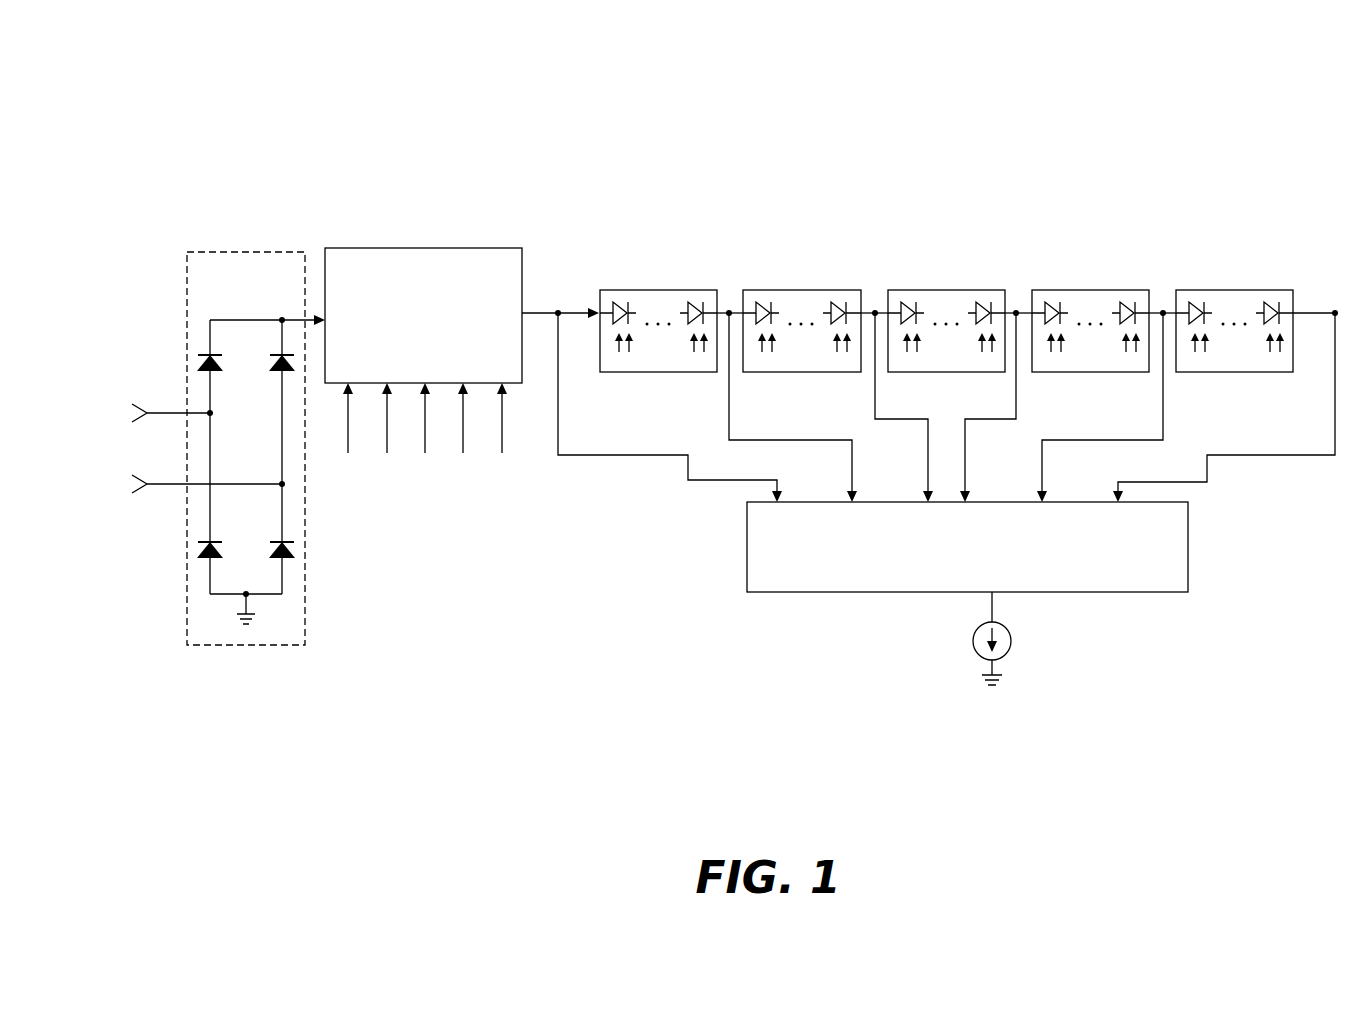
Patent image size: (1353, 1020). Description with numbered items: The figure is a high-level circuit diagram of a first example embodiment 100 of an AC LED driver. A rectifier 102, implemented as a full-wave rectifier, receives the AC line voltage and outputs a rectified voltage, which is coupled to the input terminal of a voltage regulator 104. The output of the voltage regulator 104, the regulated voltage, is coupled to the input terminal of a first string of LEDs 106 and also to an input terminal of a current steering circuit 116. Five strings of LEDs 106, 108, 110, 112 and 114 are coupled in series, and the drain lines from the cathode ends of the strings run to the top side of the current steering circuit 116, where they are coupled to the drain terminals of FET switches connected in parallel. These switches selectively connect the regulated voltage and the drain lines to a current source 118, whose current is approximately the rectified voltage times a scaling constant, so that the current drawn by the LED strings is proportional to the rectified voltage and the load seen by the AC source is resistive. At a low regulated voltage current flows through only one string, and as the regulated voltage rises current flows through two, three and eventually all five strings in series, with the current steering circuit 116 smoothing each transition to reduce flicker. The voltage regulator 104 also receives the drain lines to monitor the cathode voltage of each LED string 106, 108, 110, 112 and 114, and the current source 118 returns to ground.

The first example embodiment of an LED driver 100 is at (950, 140).
The rectifier 102 is at (246, 647).
The voltage regulator 104 is at (457, 248).
The first string of LEDs 106 is at (663, 290).
The second LED string 108 is at (810, 290).
The third LED string 110 is at (945, 290).
The fourth LED string 112 is at (1080, 290).
The fifth LED string 114 is at (1222, 290).
The current steering circuit 116 is at (1188, 540).
The current source 118 is at (1005, 656).